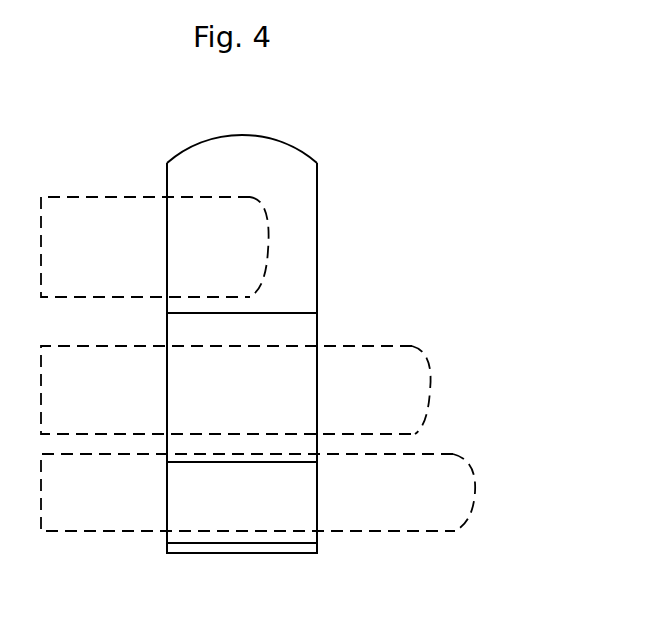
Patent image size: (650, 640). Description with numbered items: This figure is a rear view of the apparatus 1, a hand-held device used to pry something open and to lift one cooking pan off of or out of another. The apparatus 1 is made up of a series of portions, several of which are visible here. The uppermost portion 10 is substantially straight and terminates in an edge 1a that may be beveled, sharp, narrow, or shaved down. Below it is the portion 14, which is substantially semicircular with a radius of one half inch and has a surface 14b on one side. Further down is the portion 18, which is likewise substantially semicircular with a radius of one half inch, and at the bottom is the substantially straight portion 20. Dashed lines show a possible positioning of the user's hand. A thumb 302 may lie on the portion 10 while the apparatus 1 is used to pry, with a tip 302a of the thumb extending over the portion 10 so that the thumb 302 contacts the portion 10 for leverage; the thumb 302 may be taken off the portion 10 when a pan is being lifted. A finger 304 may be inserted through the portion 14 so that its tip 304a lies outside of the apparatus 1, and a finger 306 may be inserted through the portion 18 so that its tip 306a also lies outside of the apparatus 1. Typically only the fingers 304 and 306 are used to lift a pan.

The apparatus 1 is at (243, 359).
The edge 1a is at (247, 136).
The portion 10 is at (295, 257).
The portion 14 is at (285, 389).
The surface 14b is at (185, 378).
The portion 18 is at (308, 520).
The portion 20 is at (252, 549).
The thumb 302 is at (171, 211).
The tip of the thumb 302a is at (263, 222).
The finger 304 is at (287, 343).
The tip of the finger 304a is at (433, 375).
The finger 306 is at (306, 460).
The tip of the finger 306a is at (473, 483).